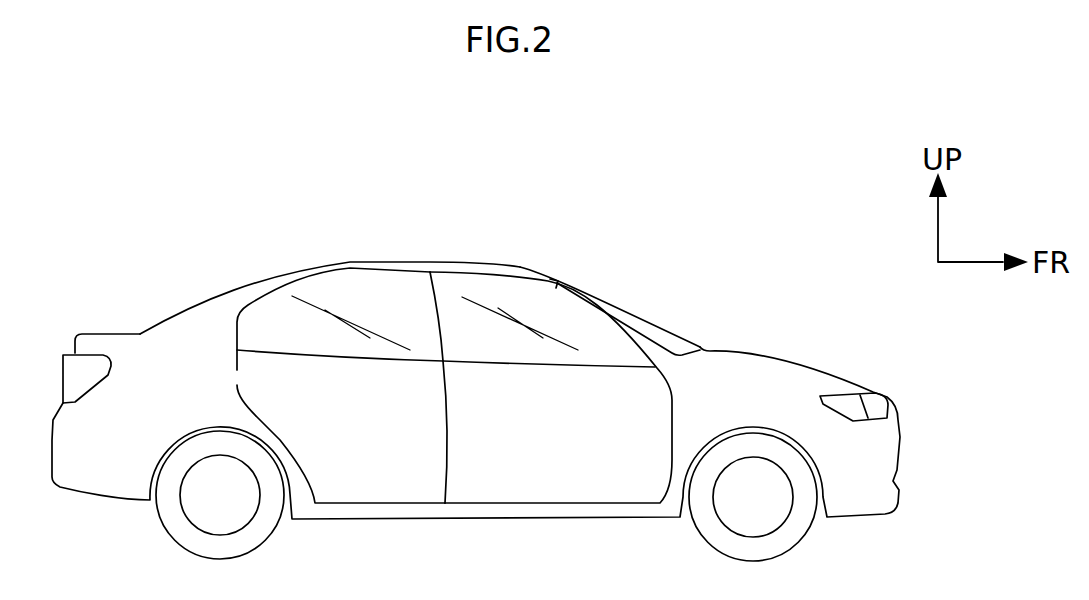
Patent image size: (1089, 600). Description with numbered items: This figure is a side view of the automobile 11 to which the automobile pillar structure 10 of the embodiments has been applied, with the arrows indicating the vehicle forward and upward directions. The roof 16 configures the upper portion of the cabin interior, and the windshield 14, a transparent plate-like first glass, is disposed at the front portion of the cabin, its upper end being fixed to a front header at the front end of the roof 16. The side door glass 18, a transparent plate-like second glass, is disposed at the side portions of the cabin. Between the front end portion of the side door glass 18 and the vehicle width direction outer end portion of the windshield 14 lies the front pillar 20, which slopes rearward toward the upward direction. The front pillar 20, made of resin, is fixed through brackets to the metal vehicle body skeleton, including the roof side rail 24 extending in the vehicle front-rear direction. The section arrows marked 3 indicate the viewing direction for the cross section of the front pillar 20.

The automobile pillar structure 10 is at (662, 334).
The automobile 11 is at (656, 177).
The windshield 14 is at (640, 315).
The roof 16 is at (369, 263).
The side door glass 18 is at (512, 290).
The front pillar 20 is at (587, 298).
The roof side rail 24 is at (450, 271).
The section line of FIG. 3 is at (548, 352).